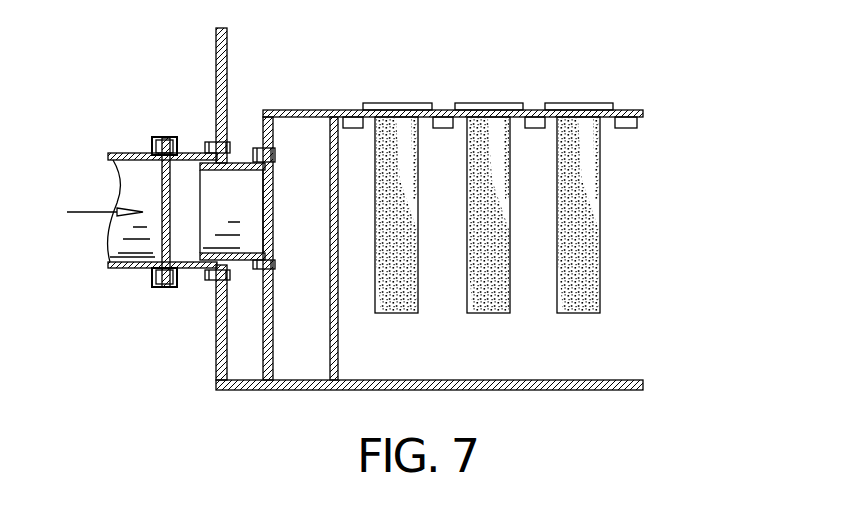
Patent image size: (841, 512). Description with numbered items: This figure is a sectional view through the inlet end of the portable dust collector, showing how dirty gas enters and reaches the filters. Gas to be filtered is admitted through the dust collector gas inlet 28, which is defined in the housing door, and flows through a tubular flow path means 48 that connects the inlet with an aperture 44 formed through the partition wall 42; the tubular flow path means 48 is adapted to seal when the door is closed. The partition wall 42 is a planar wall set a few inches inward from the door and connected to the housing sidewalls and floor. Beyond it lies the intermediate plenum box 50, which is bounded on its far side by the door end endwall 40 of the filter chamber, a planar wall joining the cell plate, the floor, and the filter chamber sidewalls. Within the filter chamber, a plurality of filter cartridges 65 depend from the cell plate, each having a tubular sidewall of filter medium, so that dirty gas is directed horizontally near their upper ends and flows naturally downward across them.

The dust collector gas inlet 28 is at (201, 153).
The door end endwall 40 is at (338, 370).
The partition wall 42 is at (270, 368).
The aperture 44 is at (268, 208).
The tubular flow path means 48 is at (238, 264).
The intermediate plenum box 50 is at (317, 252).
The filter cartridges 65 is at (492, 212).